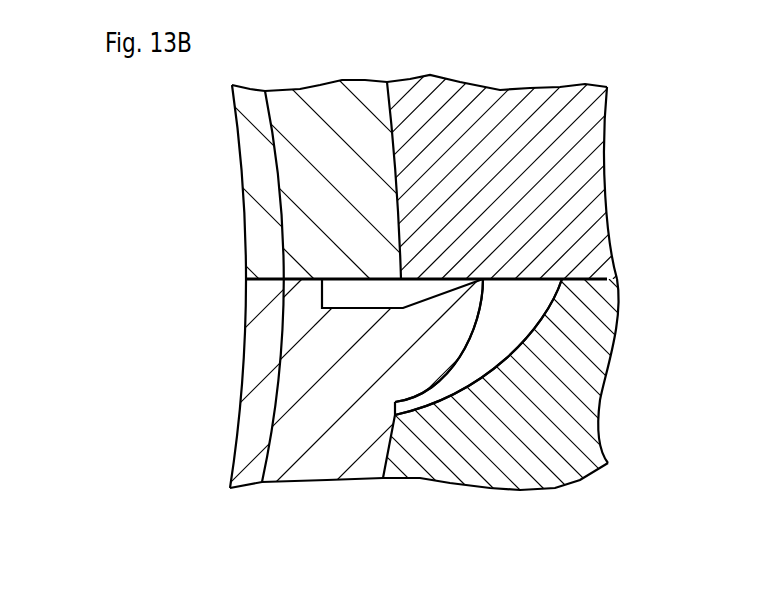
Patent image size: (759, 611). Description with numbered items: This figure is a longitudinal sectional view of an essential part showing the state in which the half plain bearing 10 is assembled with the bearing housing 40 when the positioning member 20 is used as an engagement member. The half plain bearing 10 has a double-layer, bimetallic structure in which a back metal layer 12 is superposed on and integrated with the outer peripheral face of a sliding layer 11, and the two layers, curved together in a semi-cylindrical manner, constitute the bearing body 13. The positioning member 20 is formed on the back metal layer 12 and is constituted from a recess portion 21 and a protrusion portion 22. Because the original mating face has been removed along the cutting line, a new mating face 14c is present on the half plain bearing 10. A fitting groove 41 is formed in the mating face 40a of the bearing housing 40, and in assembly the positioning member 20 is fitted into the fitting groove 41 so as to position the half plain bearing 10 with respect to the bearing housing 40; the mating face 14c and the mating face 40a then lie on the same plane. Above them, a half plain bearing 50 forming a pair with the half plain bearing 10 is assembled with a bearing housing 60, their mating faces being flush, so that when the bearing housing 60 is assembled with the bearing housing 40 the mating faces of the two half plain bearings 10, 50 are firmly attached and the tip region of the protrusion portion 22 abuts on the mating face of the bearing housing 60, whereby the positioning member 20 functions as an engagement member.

The half plain bearing 10 is at (344, 339).
The sliding layer 11 is at (247, 487).
The back metal layer 12 is at (290, 485).
The bearing body 13 is at (344, 339).
The mating face 14c is at (262, 277).
The positioning member 20 is at (482, 342).
The recess portion 21 is at (322, 296).
The protrusion portion 22 is at (477, 299).
The bearing housing 40 is at (471, 389).
The mating face 40a is at (576, 273).
The fitting groove 41 is at (463, 380).
The half plain bearing 50 is at (245, 203).
The bearing housing 60 is at (603, 167).